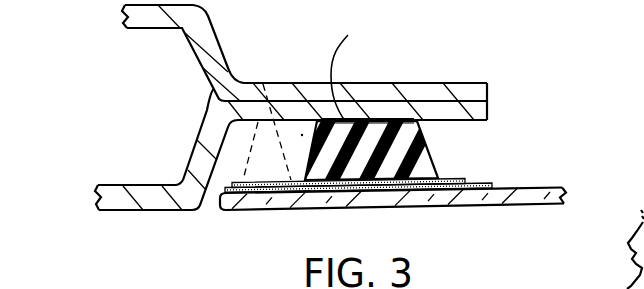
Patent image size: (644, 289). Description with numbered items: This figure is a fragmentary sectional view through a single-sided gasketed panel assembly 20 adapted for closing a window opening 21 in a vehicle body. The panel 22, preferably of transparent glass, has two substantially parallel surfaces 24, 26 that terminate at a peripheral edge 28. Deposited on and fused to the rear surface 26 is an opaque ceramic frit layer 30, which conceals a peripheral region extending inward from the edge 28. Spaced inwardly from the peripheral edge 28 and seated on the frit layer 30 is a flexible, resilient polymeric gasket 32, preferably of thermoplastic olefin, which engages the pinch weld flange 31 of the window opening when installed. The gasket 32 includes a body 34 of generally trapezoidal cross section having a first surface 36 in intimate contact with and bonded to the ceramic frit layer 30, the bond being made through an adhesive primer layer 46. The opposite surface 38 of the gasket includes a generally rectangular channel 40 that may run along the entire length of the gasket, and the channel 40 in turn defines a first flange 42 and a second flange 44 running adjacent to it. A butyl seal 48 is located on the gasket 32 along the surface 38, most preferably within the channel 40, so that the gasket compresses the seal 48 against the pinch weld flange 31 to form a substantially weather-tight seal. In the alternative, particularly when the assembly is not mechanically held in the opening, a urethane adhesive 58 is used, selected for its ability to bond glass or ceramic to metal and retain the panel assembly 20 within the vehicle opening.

The panel assembly 20 is at (562, 122).
The window opening 21 is at (489, 108).
The panel 22 is at (517, 200).
The surface 24 is at (558, 204).
The surface 26 is at (551, 187).
The peripheral edge 28 is at (220, 197).
The ceramic frit layer 30 is at (482, 183).
The pinch weld flange 31 is at (478, 84).
The gasket 32 is at (429, 132).
The body 34 is at (371, 170).
The first surface 36 is at (306, 192).
The opposite surface 38 is at (398, 121).
The channel 40 is at (372, 85).
The first flange 42 is at (324, 120).
The second flange 44 is at (443, 84).
The adhesive primer layer 46 is at (452, 180).
The butyl seal 48 is at (345, 62).
The urethane adhesive 58 is at (261, 84).